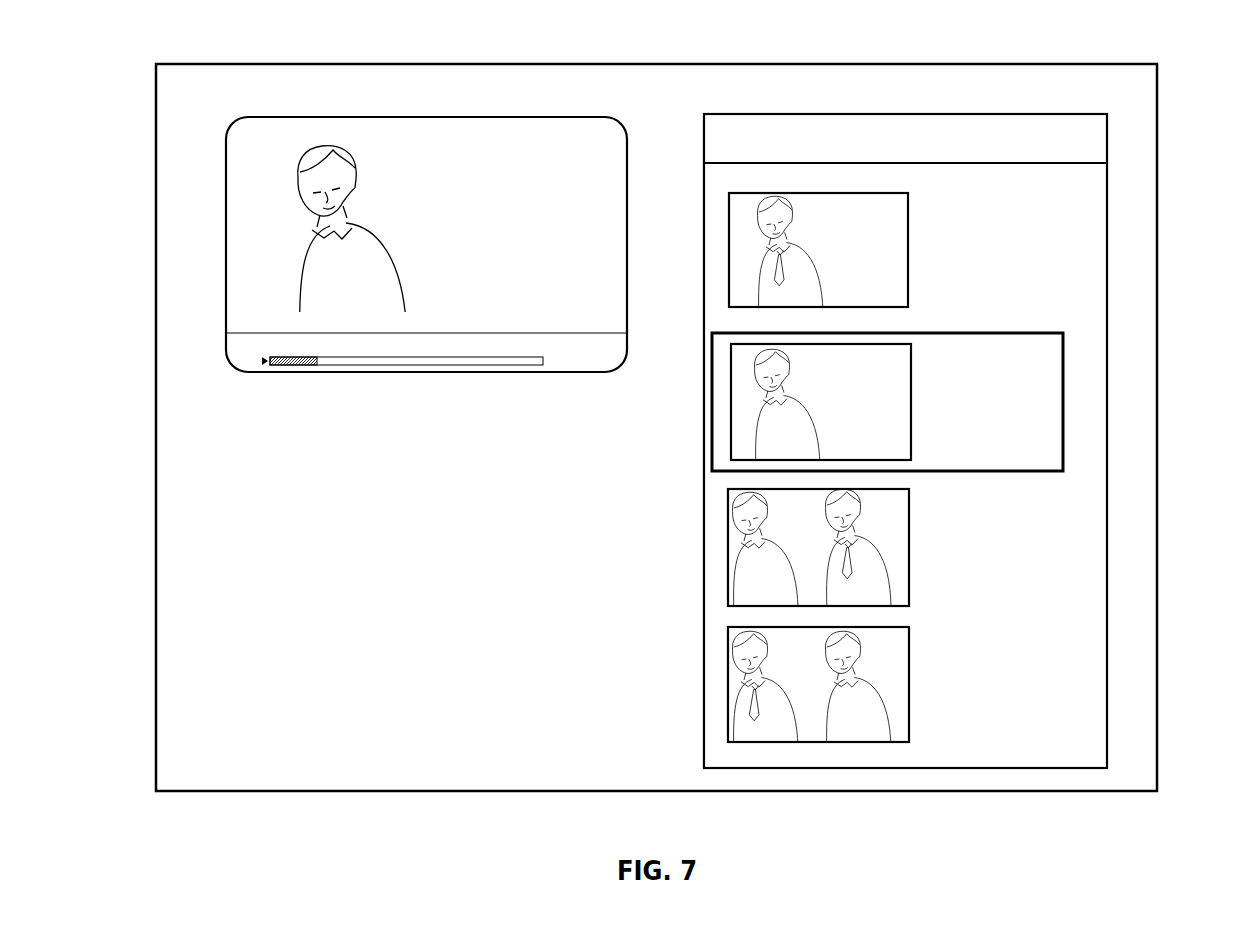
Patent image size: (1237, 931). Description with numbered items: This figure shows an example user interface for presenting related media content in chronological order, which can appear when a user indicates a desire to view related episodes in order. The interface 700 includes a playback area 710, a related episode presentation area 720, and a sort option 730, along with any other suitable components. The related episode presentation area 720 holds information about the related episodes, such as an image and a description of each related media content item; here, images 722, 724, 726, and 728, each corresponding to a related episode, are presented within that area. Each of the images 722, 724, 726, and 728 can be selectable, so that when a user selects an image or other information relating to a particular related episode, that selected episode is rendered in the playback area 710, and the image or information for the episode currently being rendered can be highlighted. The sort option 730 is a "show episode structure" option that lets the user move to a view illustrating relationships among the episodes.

The interface 700 is at (657, 47).
The playback area 710 is at (224, 229).
The related episode presentation area 720 is at (1110, 330).
The image 722 is at (912, 246).
The image 724 is at (915, 425).
The image 726 is at (913, 568).
The image 728 is at (913, 718).
The sort option 730 is at (1110, 136).